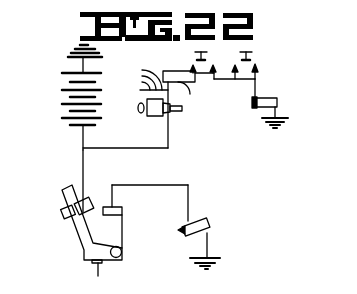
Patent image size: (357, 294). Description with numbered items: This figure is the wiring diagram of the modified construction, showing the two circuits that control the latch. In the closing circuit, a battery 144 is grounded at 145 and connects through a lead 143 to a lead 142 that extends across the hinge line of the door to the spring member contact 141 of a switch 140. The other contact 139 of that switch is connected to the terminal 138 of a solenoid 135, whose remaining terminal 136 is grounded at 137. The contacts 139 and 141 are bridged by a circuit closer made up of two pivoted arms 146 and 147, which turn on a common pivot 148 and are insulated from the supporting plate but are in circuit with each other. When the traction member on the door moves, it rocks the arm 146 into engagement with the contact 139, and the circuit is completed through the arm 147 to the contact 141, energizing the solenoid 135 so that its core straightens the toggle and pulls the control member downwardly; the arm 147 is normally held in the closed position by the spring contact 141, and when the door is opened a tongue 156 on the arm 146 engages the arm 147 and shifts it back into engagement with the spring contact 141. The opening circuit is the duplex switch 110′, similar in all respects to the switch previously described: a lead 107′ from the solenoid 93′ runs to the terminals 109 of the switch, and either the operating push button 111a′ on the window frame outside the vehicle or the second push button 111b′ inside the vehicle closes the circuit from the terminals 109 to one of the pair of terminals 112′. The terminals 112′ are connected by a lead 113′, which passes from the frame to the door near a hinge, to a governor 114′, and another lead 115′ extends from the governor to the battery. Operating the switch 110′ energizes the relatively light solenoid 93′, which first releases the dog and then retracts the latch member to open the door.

The ground 145 is at (72, 56).
The battery 144 is at (98, 99).
The lead 143 is at (86, 139).
The lead 142 is at (83, 170).
The lead 115′ is at (147, 118).
The lead 113′ is at (169, 81).
The terminals 112′ is at (176, 69).
The operating push button 111a′ is at (184, 61).
The second push button 111b′ is at (254, 45).
The terminals 109 is at (255, 67).
The switch 110′ is at (301, 53).
The lead 107′ is at (283, 84).
The solenoid 93′ is at (283, 111).
The governor 114′ is at (159, 119).
The terminal 138 is at (189, 194).
The contact 139 is at (122, 212).
The pivoted arm 146 is at (124, 242).
The switch 140 is at (84, 253).
The pivoted arm 147 is at (68, 193).
The contact 141 is at (82, 205).
The pivot 148 is at (122, 256).
The tongue 156 is at (99, 278).
The solenoid 135 is at (208, 223).
The terminal 136 is at (210, 242).
The ground 137 is at (215, 260).